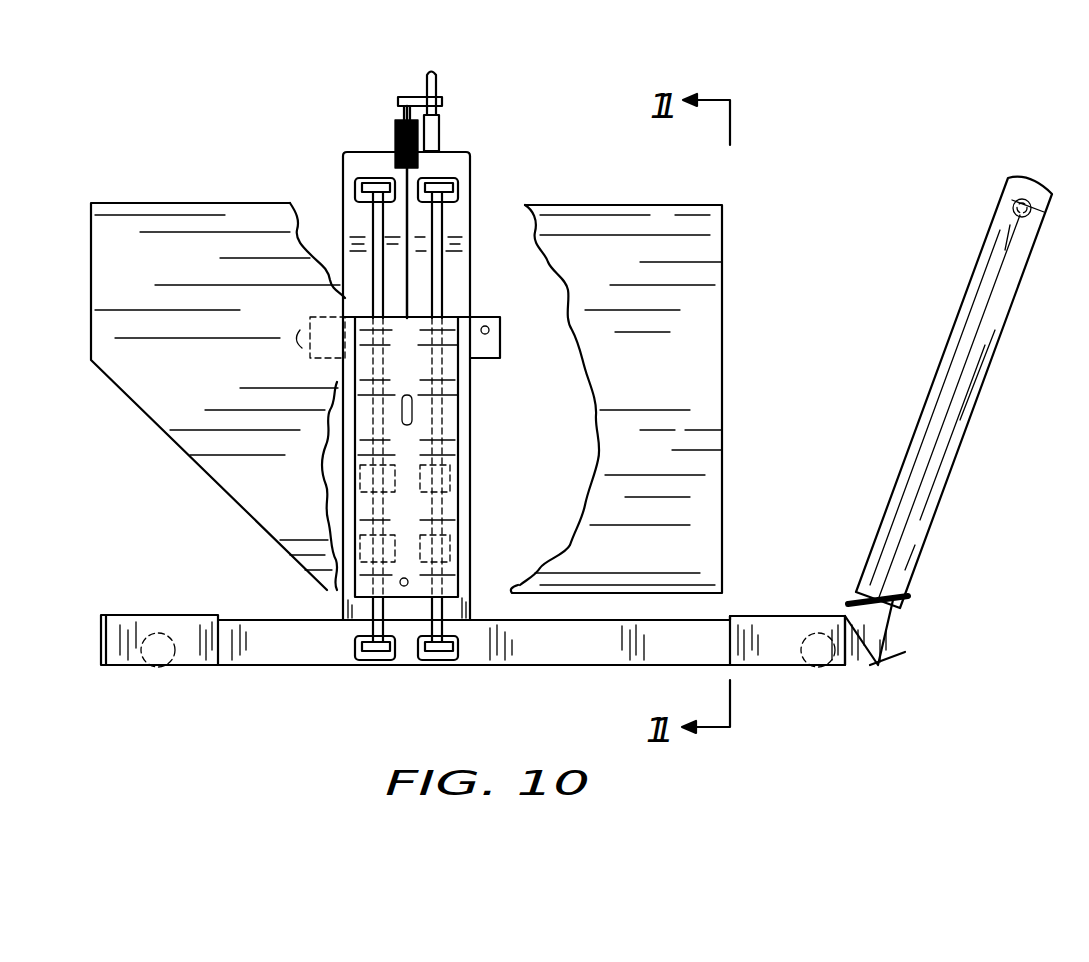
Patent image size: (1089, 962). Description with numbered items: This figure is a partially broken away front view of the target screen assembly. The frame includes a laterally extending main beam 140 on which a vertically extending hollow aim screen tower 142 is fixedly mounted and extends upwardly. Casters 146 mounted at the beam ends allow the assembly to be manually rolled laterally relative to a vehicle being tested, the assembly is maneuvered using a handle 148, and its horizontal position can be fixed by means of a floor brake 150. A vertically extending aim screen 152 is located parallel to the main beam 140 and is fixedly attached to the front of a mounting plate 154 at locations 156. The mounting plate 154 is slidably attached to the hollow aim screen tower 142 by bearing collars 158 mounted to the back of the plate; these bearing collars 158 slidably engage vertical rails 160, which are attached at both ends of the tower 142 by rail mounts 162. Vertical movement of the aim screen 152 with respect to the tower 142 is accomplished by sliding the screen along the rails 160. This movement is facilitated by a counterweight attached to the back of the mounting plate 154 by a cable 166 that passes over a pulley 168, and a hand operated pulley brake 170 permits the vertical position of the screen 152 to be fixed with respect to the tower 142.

The main beam 140 is at (536, 665).
The aim screen tower 142 is at (458, 150).
The casters 146 is at (160, 667).
The handle 148 is at (1013, 216).
The floor brake 150 is at (898, 657).
The aim screen 152 is at (650, 205).
The mounting plate 154 is at (420, 436).
The locations 156 is at (492, 537).
The bearing collars 158 is at (400, 508).
The vertical rails 160 is at (440, 258).
The rail mounts 162 is at (445, 190).
The cable 166 is at (400, 208).
The pulley 168 is at (395, 125).
The pulley brake 170 is at (420, 98).